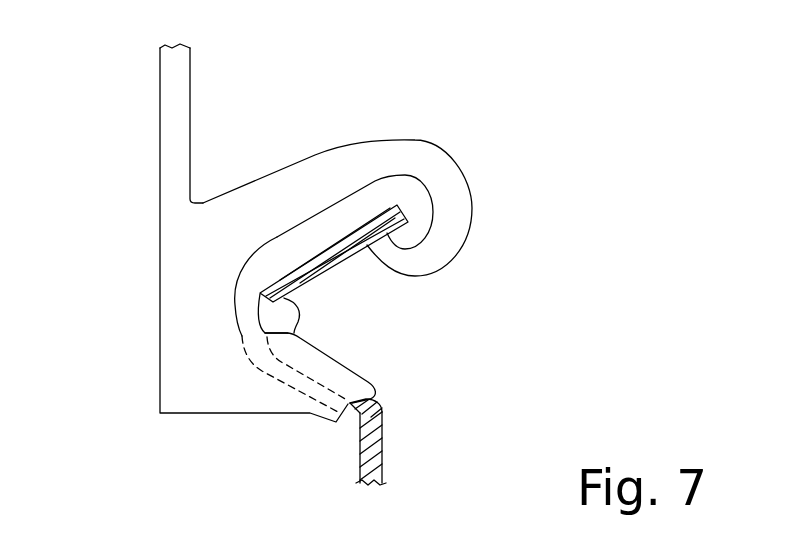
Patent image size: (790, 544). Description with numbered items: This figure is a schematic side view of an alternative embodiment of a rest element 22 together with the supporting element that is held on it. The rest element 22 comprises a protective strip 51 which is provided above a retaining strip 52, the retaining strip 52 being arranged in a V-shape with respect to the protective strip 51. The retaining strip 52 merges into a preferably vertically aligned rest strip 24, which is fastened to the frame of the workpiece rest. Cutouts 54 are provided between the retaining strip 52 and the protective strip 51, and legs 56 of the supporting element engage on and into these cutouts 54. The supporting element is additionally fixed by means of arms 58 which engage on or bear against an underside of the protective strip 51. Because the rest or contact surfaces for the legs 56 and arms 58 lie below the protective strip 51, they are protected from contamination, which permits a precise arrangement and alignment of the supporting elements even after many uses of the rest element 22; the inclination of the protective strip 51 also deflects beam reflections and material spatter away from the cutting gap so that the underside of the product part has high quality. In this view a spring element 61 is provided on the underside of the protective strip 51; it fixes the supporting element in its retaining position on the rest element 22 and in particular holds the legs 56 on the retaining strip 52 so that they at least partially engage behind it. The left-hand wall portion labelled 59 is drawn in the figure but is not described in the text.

The rest element 22 is at (352, 431).
The rest strip 24 is at (370, 458).
The protective strip 51 is at (327, 252).
The retaining strip 52 is at (376, 413).
The cutouts 54 is at (258, 311).
The legs 56 is at (308, 340).
The arms 58 is at (322, 167).
The wall portion 59 is at (180, 270).
The spring element 61 is at (295, 316).